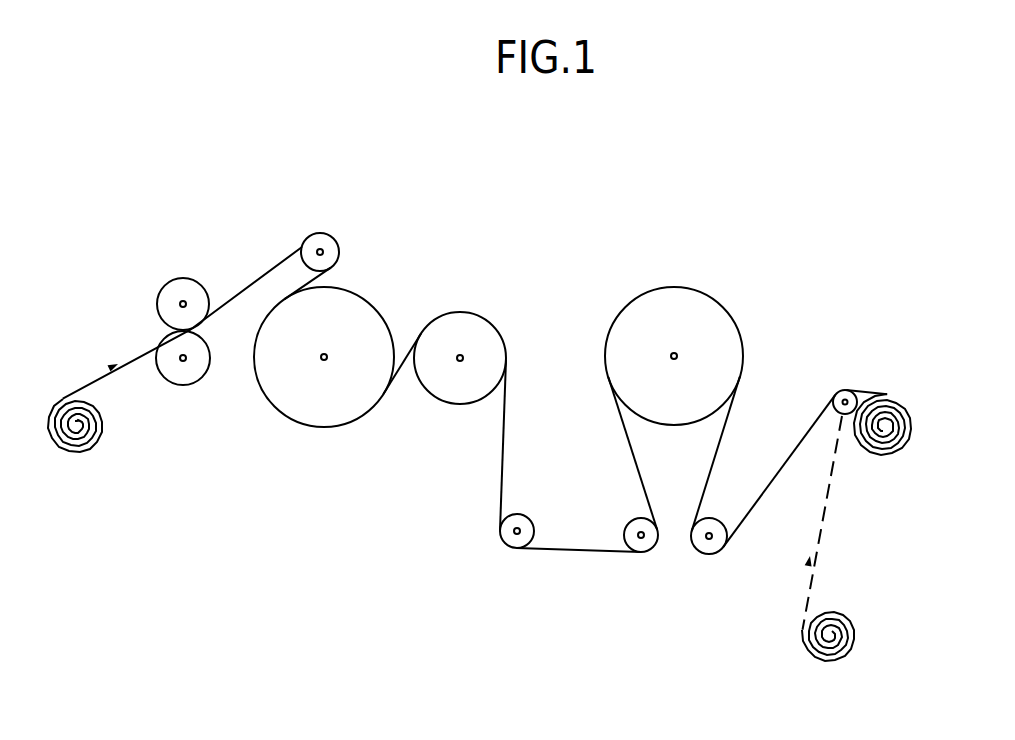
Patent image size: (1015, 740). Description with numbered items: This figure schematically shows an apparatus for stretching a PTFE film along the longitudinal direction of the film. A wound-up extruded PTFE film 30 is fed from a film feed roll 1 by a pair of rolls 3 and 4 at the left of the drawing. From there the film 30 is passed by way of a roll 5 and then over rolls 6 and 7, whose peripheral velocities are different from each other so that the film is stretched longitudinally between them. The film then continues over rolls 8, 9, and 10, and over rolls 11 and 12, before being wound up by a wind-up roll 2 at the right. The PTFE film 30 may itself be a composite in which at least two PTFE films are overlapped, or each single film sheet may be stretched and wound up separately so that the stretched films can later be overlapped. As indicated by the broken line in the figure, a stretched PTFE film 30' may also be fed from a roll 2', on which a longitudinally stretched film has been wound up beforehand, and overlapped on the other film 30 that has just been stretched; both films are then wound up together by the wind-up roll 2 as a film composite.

The film feed roll 1 is at (96, 461).
The wind-up roll 2 is at (903, 399).
The roll 2' is at (878, 650).
The roll 3 is at (193, 372).
The roll 4 is at (170, 293).
The roll 5 is at (330, 248).
The roll 6 is at (355, 315).
The roll 7 is at (465, 323).
The roll 8 is at (516, 548).
The roll 9 is at (646, 553).
The roll 10 is at (695, 305).
The roll 11 is at (713, 545).
The roll 12 is at (843, 390).
The PTFE film 30 is at (182, 289).
The stretched PTFE film 30' is at (846, 523).